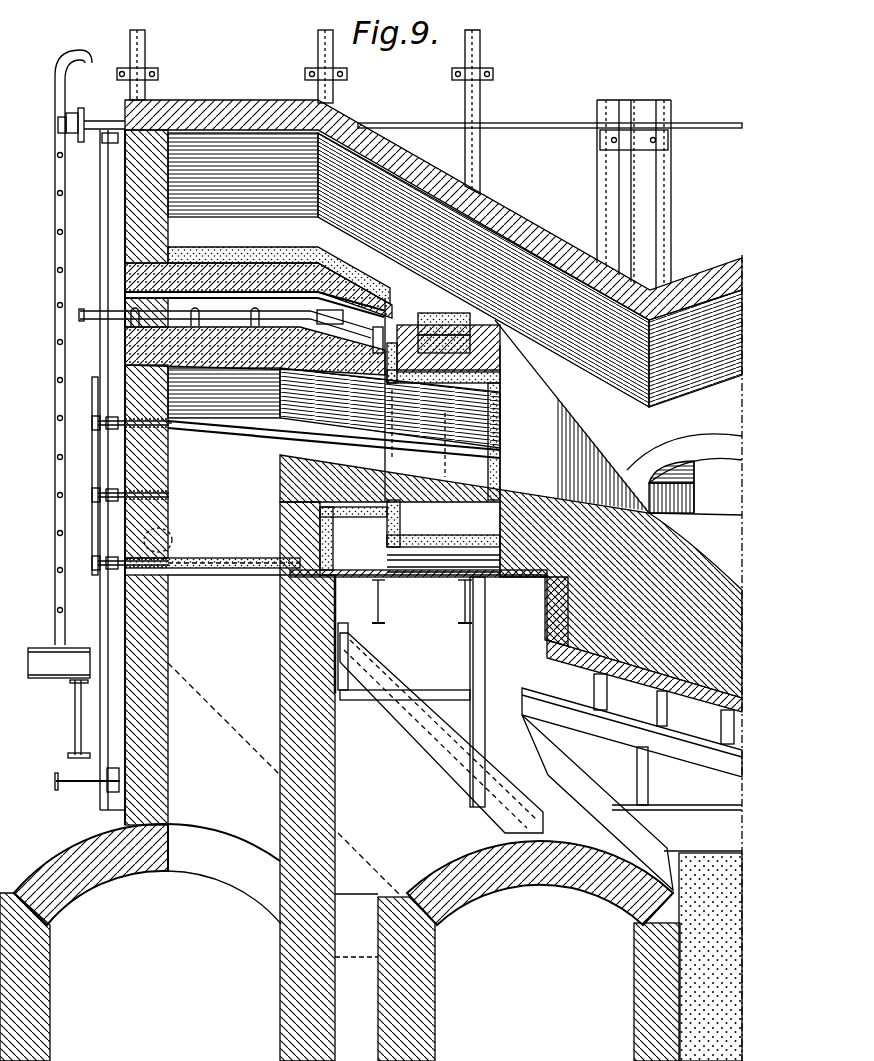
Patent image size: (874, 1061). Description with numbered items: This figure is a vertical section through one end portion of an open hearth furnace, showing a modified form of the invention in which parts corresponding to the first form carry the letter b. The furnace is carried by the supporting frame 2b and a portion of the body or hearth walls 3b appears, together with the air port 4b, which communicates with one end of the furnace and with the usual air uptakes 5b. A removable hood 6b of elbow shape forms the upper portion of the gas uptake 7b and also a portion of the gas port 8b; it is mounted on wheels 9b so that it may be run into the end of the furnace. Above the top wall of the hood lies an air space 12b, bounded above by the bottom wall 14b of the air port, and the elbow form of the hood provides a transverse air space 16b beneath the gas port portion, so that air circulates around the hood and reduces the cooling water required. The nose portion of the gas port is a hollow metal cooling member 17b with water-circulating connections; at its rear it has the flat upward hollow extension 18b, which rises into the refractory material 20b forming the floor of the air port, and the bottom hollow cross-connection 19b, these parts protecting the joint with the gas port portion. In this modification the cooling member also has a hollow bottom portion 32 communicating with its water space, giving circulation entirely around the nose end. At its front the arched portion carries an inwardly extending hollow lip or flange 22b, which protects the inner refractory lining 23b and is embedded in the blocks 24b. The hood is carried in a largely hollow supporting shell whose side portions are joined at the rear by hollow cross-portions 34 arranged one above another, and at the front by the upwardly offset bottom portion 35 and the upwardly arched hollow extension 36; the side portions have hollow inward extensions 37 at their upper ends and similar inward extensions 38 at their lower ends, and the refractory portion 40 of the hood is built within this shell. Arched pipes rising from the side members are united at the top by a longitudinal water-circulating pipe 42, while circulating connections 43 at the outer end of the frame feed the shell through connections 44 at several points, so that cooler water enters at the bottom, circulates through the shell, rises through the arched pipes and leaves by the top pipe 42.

The supporting frame of the furnace 2b is at (672, 212).
The body or hearth walls 3b is at (684, 457).
The air port 4b is at (386, 300).
The air uptakes 5b is at (540, 883).
The removable hood 6b is at (125, 525).
The gas uptake 7b is at (224, 749).
The gas port 8b is at (312, 428).
The wheels 9b is at (172, 543).
The air space 12b is at (125, 295).
The bottom wall of the air port 14b is at (125, 278).
The transverse air space 16b is at (362, 575).
The cooling member 17b is at (540, 373).
The flat upward hollow extension 18b is at (396, 346).
The bottom hollow cross-connection 19b is at (362, 565).
The refractory material 20b is at (398, 322).
The hollow lip or flange 22b is at (500, 404).
The inner refractory lining 23b is at (500, 424).
The blocks 24b is at (505, 352).
The hollow bottom portion 32 is at (455, 552).
The hollow cross-portions 34 is at (170, 426).
The upwardly offset bottom portion 35 is at (320, 515).
The upwardly arched hollow extension 36 is at (390, 312).
The hollow inward extensions 37 is at (262, 428).
The inward extensions 38 is at (212, 566).
The refractory portion of the hood 40 is at (135, 345).
The longitudinal water-circulating pipe 42 is at (80, 315).
The circulating connections 43 is at (92, 438).
The connections 44 is at (120, 492).